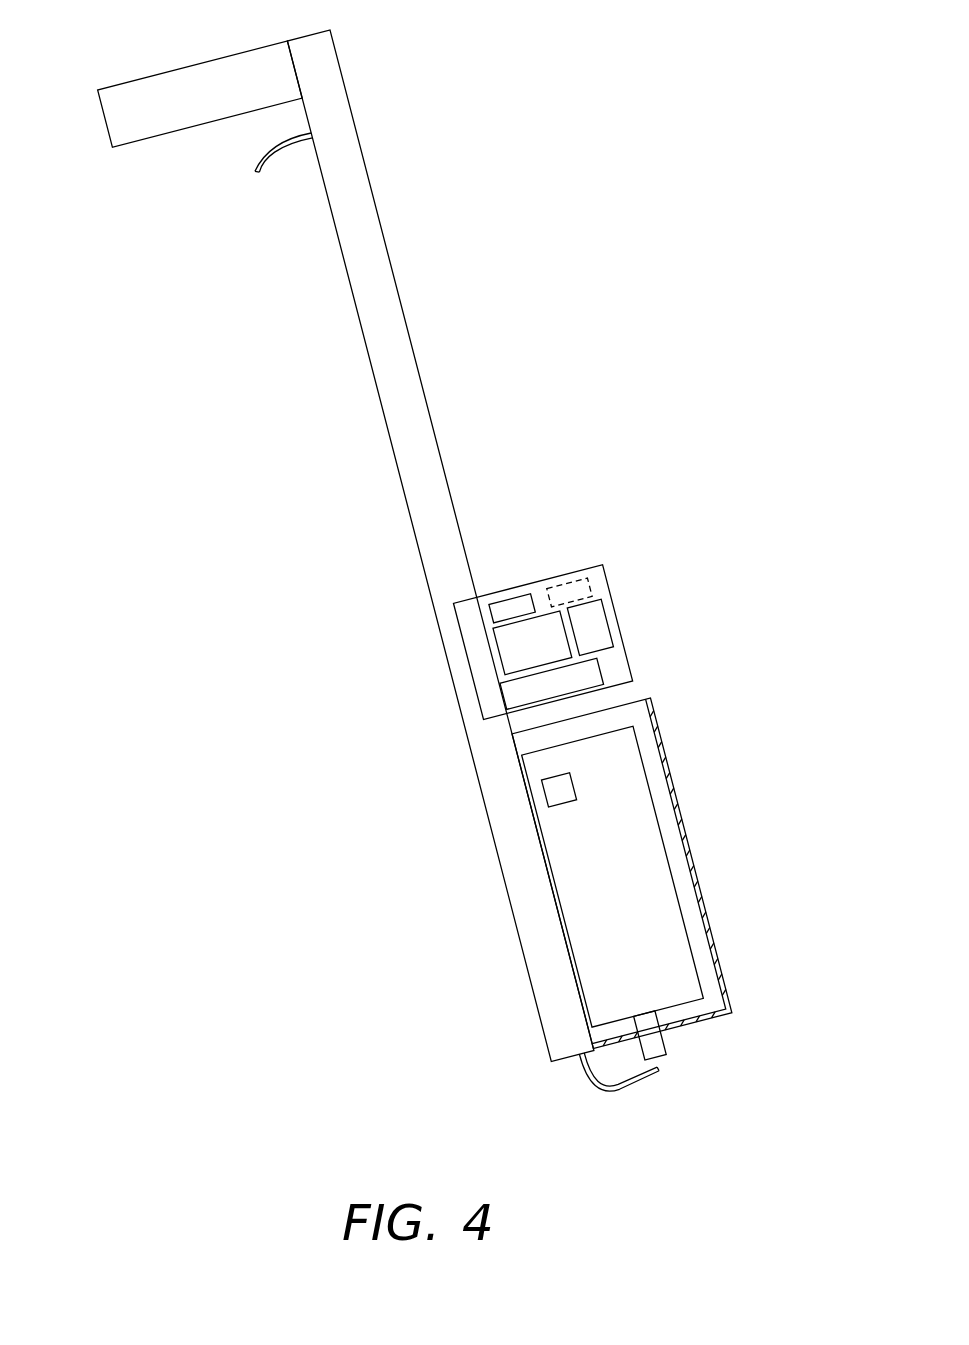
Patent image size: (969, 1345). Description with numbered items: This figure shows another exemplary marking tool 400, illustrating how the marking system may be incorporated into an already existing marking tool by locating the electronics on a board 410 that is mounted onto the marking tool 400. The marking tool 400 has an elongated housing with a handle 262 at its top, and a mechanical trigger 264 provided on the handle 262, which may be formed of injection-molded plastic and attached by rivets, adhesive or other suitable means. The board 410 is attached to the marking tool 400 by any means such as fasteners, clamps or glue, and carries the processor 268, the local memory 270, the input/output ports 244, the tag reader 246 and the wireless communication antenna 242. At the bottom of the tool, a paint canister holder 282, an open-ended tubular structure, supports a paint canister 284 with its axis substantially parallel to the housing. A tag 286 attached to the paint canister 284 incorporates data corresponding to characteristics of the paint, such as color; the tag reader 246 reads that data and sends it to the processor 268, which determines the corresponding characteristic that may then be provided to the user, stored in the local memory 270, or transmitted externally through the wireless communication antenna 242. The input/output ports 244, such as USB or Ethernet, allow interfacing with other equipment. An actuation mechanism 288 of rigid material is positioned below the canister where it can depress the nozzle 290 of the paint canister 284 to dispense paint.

The marking tool 400 is at (478, 120).
The handle 262 is at (220, 57).
The mechanical trigger 264 is at (255, 173).
The board 410 is at (637, 660).
The input/output ports 244 is at (502, 600).
The wireless communication antenna 242 is at (589, 579).
The local memory 270 is at (610, 625).
The processor 268 is at (493, 652).
The tag reader 246 is at (503, 708).
The paint canister holder 282 is at (667, 760).
The paint canister 284 is at (667, 833).
The tag 286 is at (548, 807).
The nozzle 290 is at (657, 1057).
The actuation mechanism 288 is at (603, 1090).